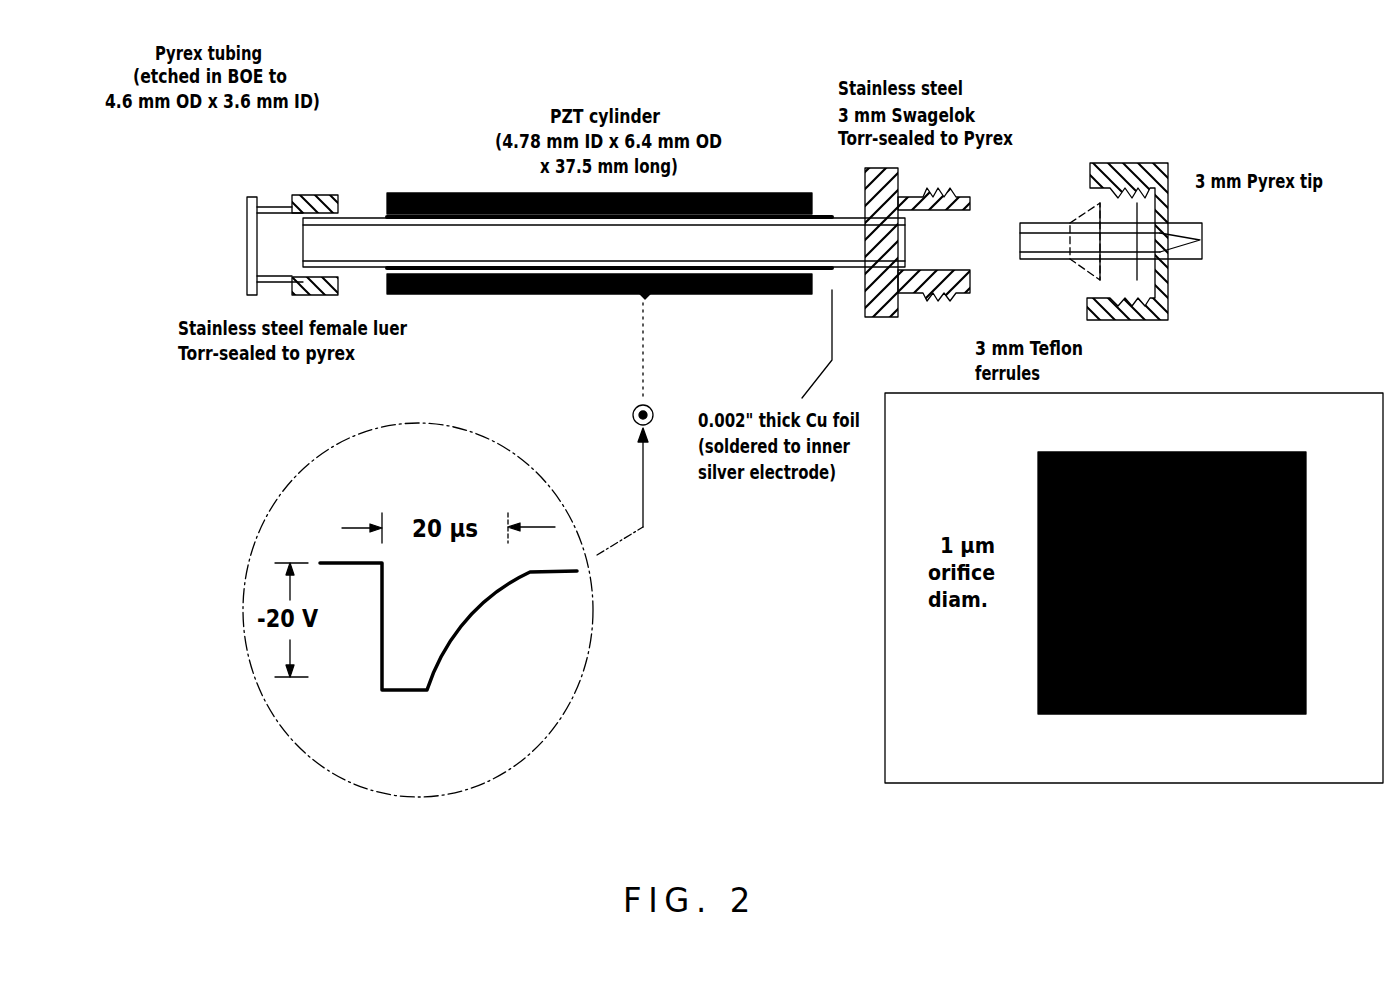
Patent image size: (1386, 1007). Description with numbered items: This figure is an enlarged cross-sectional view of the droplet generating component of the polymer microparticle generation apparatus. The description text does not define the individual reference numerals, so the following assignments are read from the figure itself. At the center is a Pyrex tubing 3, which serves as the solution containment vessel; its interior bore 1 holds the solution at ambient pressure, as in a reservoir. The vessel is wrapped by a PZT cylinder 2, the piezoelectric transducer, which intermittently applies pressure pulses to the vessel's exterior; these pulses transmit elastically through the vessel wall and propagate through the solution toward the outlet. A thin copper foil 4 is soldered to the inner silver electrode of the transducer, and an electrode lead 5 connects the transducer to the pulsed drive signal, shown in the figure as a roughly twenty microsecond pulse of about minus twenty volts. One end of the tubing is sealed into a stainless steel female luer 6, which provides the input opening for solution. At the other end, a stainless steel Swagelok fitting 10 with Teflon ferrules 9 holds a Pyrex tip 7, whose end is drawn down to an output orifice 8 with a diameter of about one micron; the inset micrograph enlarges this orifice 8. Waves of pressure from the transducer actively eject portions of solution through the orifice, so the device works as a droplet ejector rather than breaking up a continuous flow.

The Pyrex tubing bore 1 is at (604, 243).
The PZT cylinder 2 is at (462, 195).
The Pyrex tubing 3 is at (362, 205).
The Cu foil inner electrode 4 is at (820, 288).
The electrode lead 5 is at (835, 328).
The stainless steel female luer 6 is at (327, 295).
The Pyrex tip 7 is at (1183, 221).
The orifice 8 is at (1212, 388).
The Teflon ferrules 9 is at (1066, 278).
The stainless steel Swagelok fitting 10 is at (950, 186).